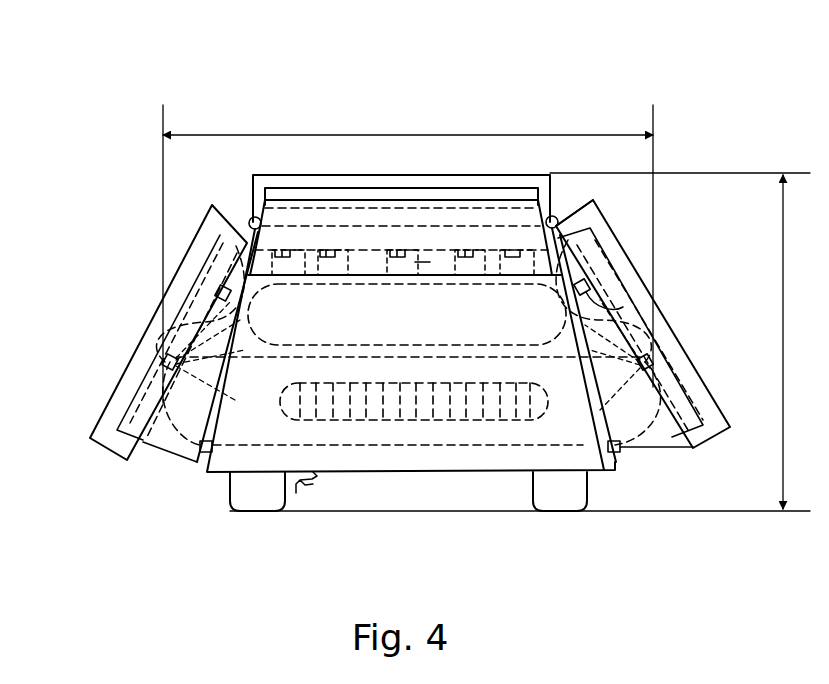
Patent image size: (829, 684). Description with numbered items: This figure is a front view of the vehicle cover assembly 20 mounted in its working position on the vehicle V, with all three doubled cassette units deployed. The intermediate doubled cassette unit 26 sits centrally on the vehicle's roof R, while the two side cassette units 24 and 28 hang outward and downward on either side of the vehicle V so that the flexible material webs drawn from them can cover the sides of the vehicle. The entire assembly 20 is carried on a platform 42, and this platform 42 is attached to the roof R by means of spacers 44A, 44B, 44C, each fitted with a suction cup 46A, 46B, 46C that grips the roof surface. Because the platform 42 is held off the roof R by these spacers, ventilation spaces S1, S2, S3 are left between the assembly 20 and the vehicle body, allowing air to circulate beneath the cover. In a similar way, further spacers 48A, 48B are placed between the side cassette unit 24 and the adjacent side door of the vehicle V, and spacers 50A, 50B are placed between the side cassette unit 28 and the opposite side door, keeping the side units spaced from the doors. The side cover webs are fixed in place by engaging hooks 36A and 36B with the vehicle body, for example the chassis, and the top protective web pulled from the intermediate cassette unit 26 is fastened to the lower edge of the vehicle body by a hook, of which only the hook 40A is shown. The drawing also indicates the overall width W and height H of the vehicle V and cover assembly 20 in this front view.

The vehicle cover assembly 20 is at (400, 75).
The side cassette unit 24 is at (633, 255).
The intermediate doubled cassette unit 26 is at (368, 186).
The side cassette unit 28 is at (188, 250).
The hook 36A is at (620, 447).
The hook 36B is at (200, 445).
The hook 40A is at (296, 493).
The platform 42 is at (420, 237).
The spacer 44A is at (340, 250).
The spacer 44B is at (390, 247).
The spacer 44C is at (453, 250).
The suction cup 46A is at (600, 290).
The suction cup 46B is at (430, 262).
The suction cup 46C is at (337, 262).
The spacer 48A is at (605, 310).
The spacer 48B is at (648, 365).
The spacer 50A is at (220, 300).
The spacer 50B is at (168, 362).
The ventilation space S1 is at (212, 223).
The ventilation space S2 is at (540, 187).
The ventilation space S3 is at (558, 237).
The vehicle roof R is at (316, 242).
The width dimension W is at (408, 252).
The height dimension H is at (520, 342).
The vehicle V is at (207, 493).